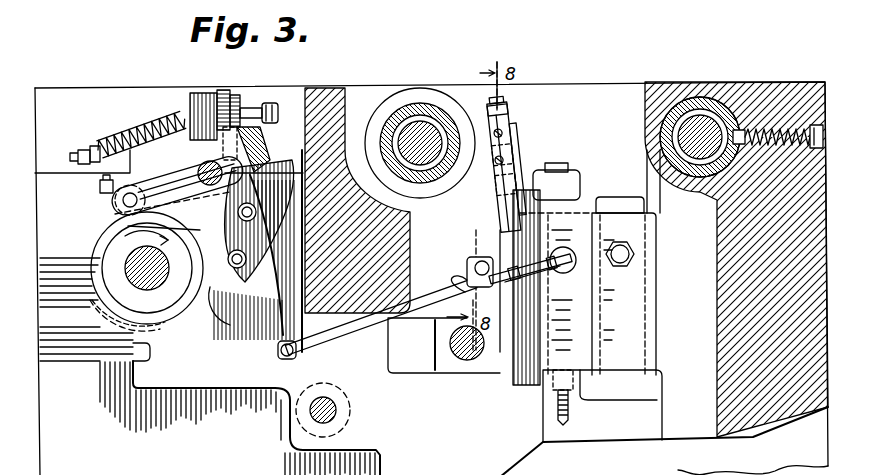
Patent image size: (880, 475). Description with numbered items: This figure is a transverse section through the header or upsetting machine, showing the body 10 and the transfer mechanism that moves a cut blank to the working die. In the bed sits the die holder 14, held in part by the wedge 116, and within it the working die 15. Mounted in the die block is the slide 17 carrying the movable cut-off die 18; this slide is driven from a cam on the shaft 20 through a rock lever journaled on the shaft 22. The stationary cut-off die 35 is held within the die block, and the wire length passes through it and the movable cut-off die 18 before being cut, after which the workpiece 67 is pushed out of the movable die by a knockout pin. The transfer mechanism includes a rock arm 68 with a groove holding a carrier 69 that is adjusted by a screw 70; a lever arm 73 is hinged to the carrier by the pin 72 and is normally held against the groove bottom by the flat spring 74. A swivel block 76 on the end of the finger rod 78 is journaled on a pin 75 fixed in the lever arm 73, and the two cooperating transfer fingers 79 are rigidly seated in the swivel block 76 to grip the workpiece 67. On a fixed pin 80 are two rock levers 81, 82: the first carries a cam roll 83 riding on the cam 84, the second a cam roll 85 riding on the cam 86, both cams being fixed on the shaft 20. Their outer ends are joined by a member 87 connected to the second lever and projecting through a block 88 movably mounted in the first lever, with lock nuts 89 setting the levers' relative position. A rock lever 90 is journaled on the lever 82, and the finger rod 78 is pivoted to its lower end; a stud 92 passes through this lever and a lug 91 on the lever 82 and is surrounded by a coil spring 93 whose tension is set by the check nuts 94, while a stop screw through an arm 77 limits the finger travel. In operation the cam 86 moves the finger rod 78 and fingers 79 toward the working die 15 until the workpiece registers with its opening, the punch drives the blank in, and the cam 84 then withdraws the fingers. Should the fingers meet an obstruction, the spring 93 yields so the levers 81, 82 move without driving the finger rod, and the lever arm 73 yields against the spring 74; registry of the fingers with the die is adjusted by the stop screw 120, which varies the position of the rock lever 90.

The body 10 is at (711, 76).
The die holder 14 is at (565, 182).
The working die 15 is at (585, 213).
The slide 17 is at (522, 385).
The cut-off die 18 is at (540, 265).
The shaft 20 is at (92, 268).
The shaft 22 is at (337, 410).
The stationary cut-off die 35 is at (525, 300).
The workpiece 67 is at (632, 256).
The rock arm 68 is at (514, 137).
The carrier 69 is at (509, 108).
The screw 70 is at (505, 103).
The pin 72 is at (510, 168).
The lever arm 73 is at (503, 190).
The flat spring 74 is at (505, 150).
The pin 75 is at (475, 260).
The swivel block 76 is at (462, 272).
The arm 77 is at (222, 92).
The finger rod 78 is at (348, 333).
The transfer fingers 79 is at (562, 273).
The fixed pin 80 is at (198, 165).
The rock lever 81 is at (140, 143).
The rock lever 82 is at (165, 258).
The cam roll 83 is at (112, 203).
The cam 84 is at (160, 332).
The cam roll 85 is at (232, 338).
The cam 86 is at (212, 302).
The member 87 is at (128, 227).
The block 88 is at (115, 214).
The lock nuts 89 is at (100, 185).
The rock lever 90 is at (268, 160).
The lug 91 is at (197, 98).
The stud 92 is at (238, 97).
The coil spring 93 is at (96, 146).
The check nuts 94 is at (80, 153).
The wedge 116 is at (630, 322).
The stop screw 120 is at (274, 103).